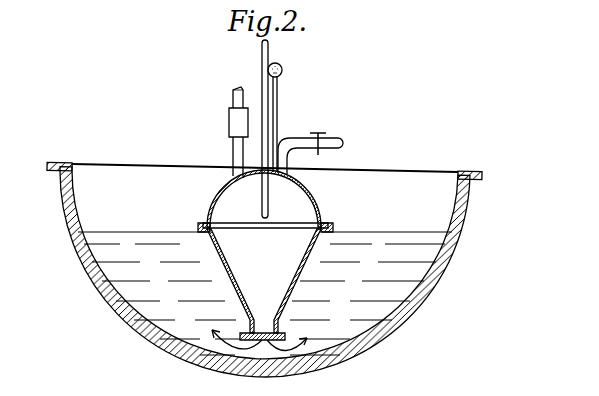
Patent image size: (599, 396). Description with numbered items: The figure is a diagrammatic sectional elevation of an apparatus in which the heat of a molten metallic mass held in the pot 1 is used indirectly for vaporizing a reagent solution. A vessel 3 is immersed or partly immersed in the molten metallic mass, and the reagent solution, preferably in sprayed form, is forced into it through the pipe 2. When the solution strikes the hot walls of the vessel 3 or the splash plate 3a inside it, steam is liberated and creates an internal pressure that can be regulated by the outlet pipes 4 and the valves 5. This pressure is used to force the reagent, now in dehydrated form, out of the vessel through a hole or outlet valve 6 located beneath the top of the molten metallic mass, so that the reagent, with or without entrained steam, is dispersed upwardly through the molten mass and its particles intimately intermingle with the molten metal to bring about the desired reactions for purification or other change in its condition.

The pot 1 is at (408, 313).
The pipe 2 is at (268, 95).
The vessel 3 is at (297, 272).
The splash plate 3a is at (271, 223).
The outlet pipe 4 is at (238, 155).
The valve 5 is at (233, 124).
The outlet valve 6 is at (262, 303).